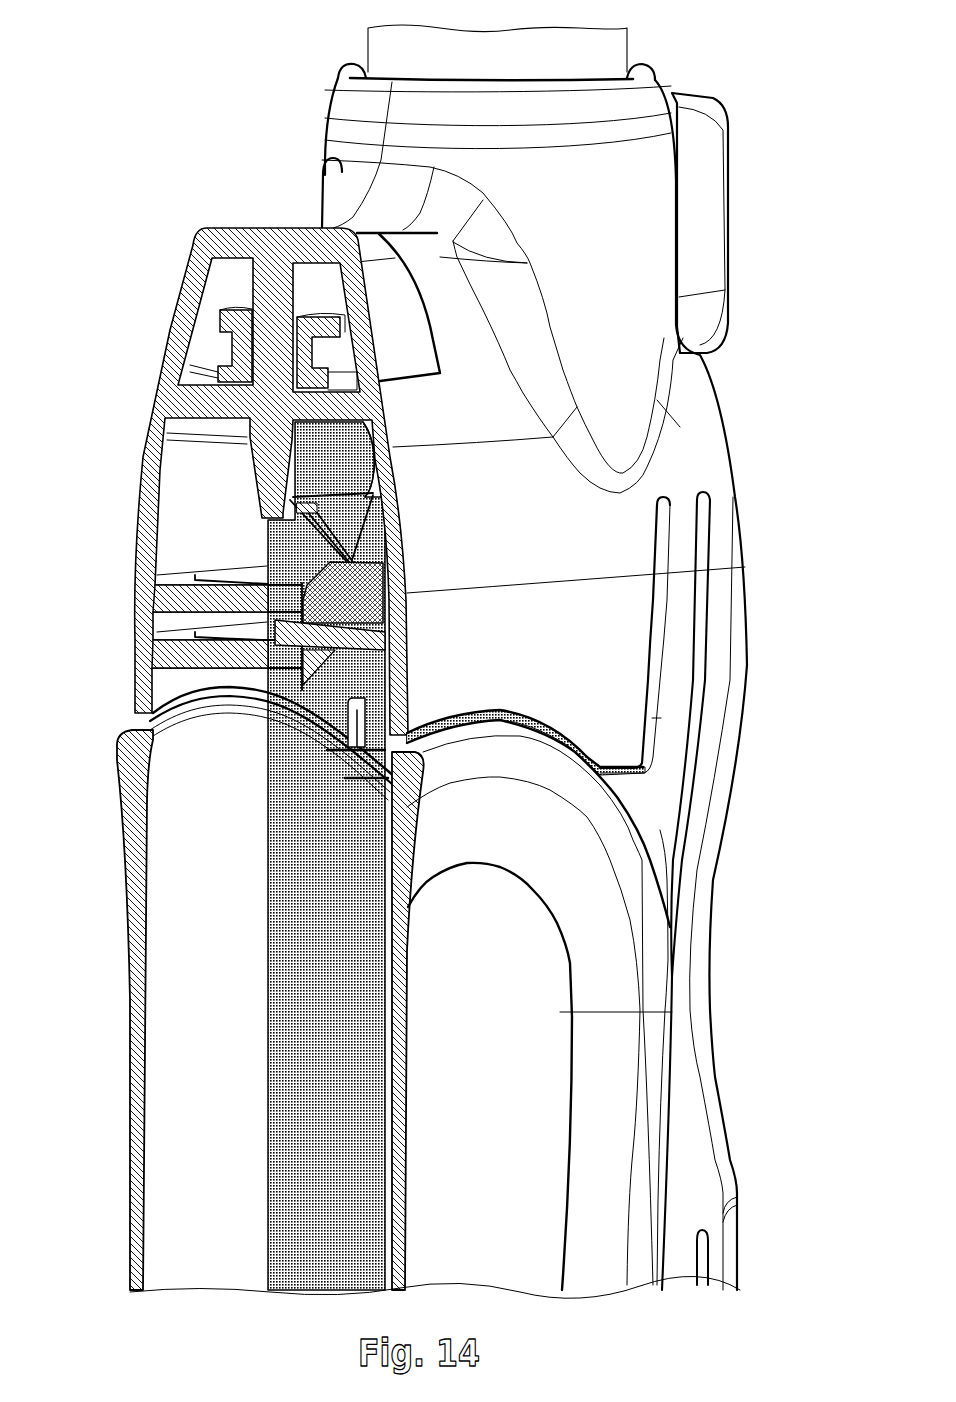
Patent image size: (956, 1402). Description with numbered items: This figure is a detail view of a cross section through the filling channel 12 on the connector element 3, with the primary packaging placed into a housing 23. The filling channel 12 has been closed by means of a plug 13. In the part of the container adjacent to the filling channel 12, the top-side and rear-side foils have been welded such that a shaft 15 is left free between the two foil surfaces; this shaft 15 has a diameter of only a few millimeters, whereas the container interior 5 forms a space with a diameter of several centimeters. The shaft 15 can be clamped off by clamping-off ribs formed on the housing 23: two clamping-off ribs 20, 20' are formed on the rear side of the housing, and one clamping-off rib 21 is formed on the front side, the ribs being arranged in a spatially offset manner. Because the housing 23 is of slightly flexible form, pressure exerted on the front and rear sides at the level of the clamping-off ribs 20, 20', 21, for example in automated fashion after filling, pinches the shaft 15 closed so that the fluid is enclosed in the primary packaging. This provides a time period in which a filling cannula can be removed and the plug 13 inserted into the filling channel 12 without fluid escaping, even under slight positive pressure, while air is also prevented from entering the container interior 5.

The connector element 3 is at (238, 338).
The container interior 5 is at (290, 880).
The filling channel 12 is at (238, 488).
The plug 13 is at (270, 400).
The shaft 15 is at (347, 600).
The clamping-off rib 20 is at (173, 592).
The clamping-off rib 20' is at (173, 647).
The clamping-off rib 21 is at (365, 638).
The housing 23 is at (492, 642).